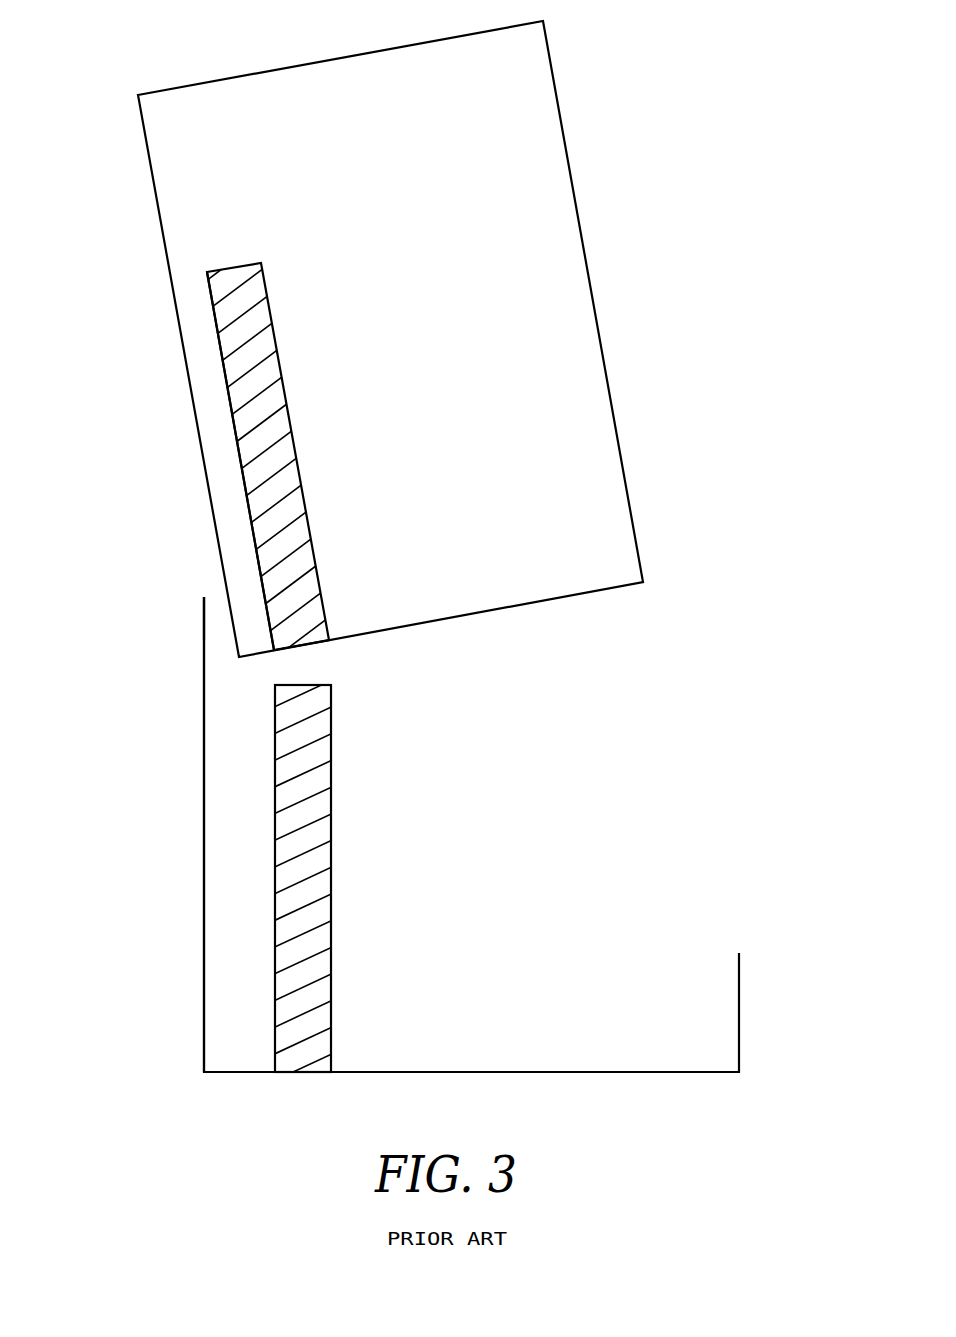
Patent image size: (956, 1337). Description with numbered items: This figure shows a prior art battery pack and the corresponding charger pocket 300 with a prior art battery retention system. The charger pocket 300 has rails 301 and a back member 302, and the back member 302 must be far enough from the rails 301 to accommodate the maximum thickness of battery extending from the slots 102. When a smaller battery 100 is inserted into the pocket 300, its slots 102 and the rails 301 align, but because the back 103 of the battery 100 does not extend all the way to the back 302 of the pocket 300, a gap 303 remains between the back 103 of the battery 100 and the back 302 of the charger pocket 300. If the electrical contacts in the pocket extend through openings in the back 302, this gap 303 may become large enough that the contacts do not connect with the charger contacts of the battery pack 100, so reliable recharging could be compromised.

The battery 100 is at (429, 326).
The slots 102 is at (267, 285).
The back of the battery 103 is at (233, 425).
The charger pocket 300 is at (442, 918).
The rails 301 is at (332, 847).
The back member 302 is at (204, 833).
The gap 303 is at (218, 625).